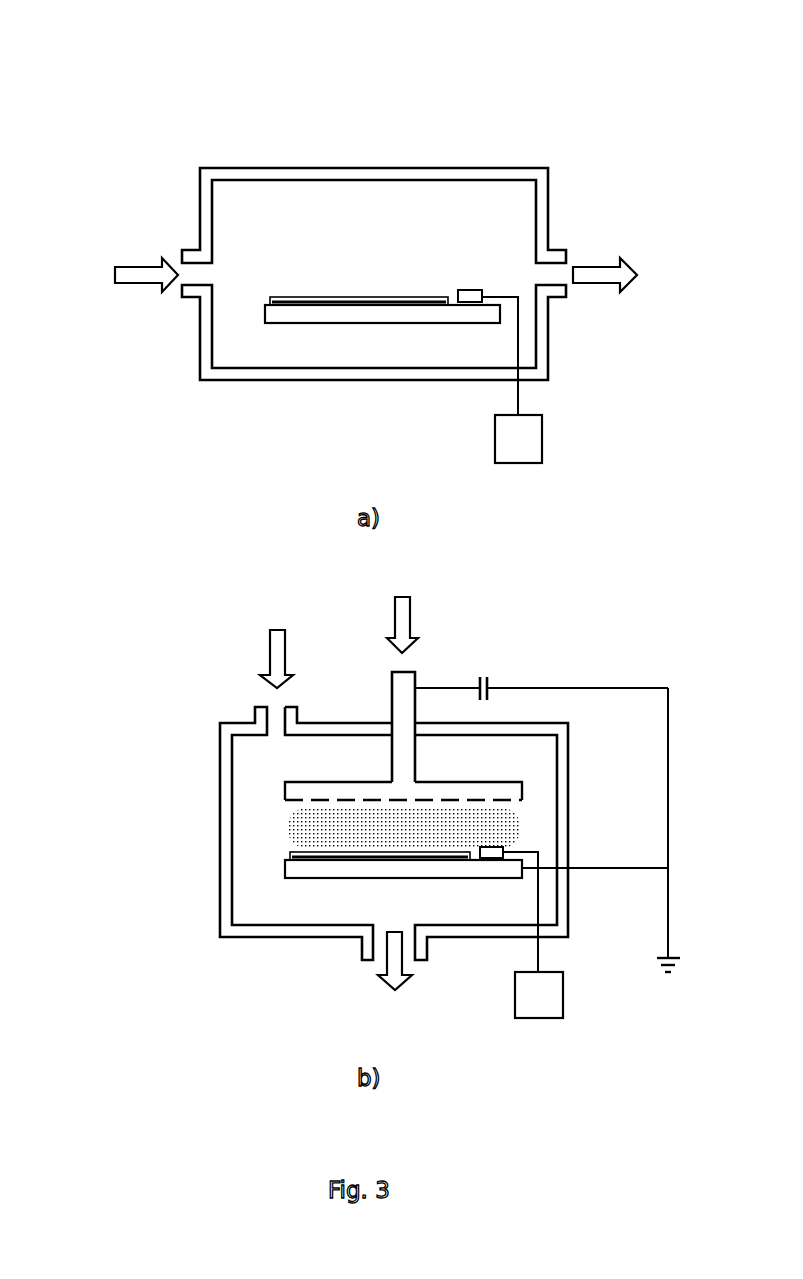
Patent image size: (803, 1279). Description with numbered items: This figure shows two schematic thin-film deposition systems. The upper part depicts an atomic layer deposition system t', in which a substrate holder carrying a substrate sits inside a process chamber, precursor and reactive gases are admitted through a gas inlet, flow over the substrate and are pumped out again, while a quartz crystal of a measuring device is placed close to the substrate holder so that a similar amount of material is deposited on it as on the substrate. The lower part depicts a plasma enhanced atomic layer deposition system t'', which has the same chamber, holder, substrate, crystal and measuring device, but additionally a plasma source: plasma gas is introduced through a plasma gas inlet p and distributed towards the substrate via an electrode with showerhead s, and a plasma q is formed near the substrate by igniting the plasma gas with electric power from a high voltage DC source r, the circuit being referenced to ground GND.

The atomic layer deposition system t' is at (350, 197).
The plasma enhanced atomic layer deposition system t'' is at (310, 833).
The plasma gas inlet p is at (402, 605).
The plasma q is at (370, 828).
The high voltage DC source r is at (485, 672).
The electrode with showerhead s is at (350, 792).
The ground GND is at (609, 846).